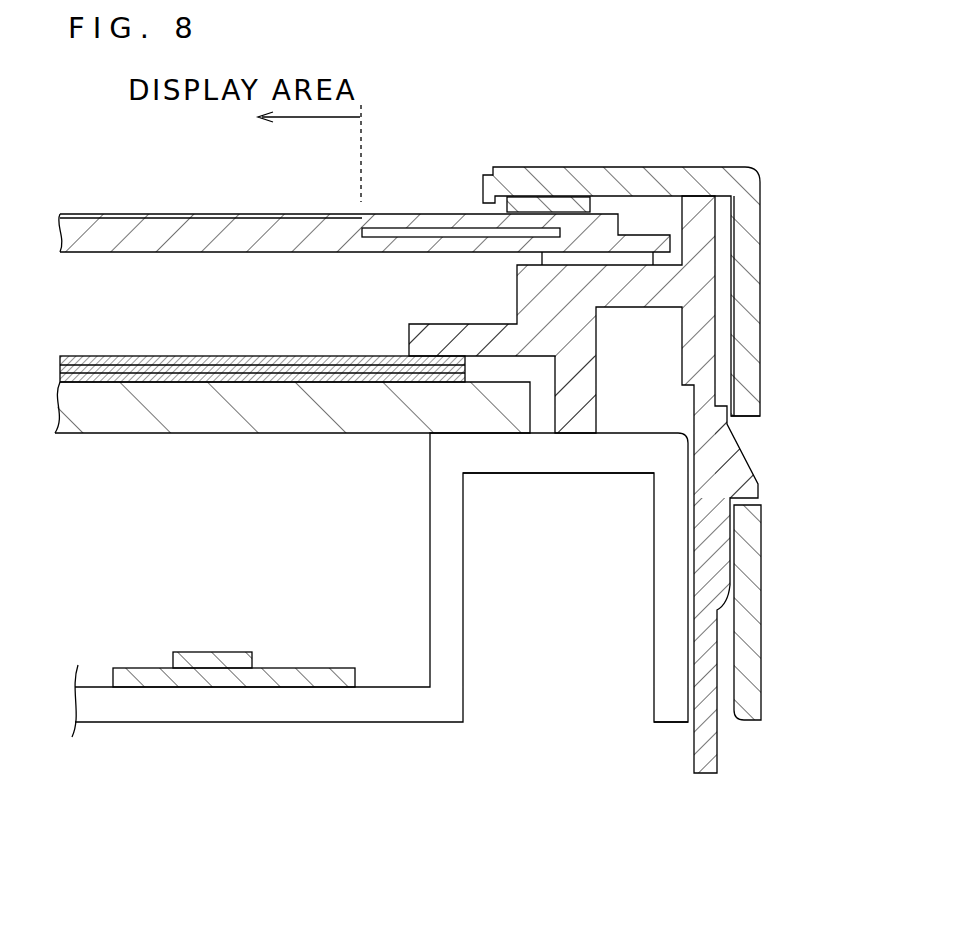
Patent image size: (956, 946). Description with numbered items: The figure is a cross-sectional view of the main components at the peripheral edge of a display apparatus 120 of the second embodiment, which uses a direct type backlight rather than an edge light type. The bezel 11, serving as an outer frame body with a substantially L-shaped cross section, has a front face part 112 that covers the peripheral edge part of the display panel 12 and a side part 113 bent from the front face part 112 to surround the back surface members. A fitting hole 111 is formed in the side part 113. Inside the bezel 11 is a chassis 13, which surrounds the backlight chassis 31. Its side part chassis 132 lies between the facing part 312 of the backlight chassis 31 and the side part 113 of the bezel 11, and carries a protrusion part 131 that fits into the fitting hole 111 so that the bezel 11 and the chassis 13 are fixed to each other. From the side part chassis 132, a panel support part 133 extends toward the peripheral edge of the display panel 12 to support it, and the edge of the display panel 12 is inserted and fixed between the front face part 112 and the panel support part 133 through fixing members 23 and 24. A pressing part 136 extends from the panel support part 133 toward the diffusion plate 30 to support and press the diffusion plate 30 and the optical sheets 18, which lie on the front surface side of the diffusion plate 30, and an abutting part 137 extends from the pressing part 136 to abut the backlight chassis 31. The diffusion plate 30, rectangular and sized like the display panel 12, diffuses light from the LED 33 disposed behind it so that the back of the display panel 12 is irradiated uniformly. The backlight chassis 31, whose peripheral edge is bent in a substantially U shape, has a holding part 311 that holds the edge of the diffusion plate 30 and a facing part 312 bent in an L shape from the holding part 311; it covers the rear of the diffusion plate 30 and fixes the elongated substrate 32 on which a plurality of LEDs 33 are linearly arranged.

The display apparatus 120 is at (826, 101).
The bezel 11 is at (667, 401).
The front face part 112 is at (649, 168).
The fitting hole 111 is at (745, 432).
The side part 113 is at (762, 562).
The protrusion part 131 is at (743, 470).
The side part chassis 132 is at (712, 350).
The panel support part 133 is at (573, 500).
The pressing part 136 is at (418, 330).
The abutting part 137 is at (582, 432).
The chassis 13 is at (698, 755).
The display panel 12 is at (233, 214).
The fixing member 24 is at (547, 199).
The fixing member 23 is at (600, 258).
The optical sheets 18 is at (60, 377).
The diffusion plate 30 is at (105, 425).
The backlight chassis 31 is at (380, 612).
The holding part 311 is at (518, 460).
The facing part 312 is at (665, 610).
The substrate 32 is at (270, 687).
The LED 33 is at (197, 661).